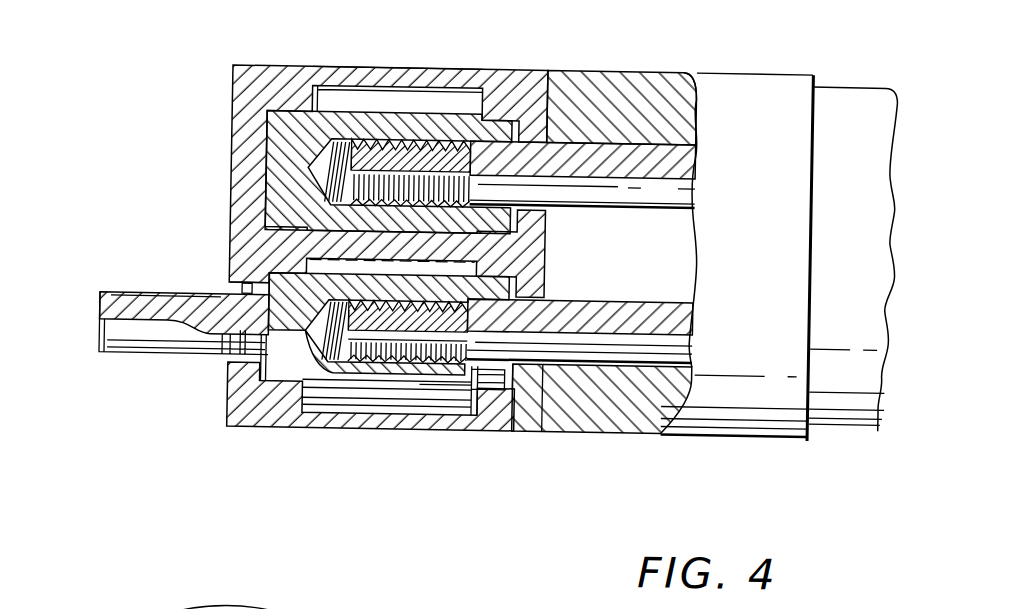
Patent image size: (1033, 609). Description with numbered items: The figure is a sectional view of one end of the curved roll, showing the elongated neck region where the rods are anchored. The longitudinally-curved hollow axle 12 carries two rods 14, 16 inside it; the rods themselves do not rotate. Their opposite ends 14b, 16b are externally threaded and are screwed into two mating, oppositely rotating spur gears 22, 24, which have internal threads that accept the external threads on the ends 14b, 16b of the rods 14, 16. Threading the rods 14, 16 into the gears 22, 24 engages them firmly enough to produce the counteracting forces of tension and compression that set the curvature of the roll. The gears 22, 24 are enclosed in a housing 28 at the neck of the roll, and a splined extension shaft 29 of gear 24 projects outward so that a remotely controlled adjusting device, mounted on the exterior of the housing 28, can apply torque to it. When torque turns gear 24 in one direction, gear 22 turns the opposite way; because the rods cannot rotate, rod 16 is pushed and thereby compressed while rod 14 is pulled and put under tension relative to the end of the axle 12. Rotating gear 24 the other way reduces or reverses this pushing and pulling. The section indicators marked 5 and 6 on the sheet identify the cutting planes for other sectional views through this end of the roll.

The hollow axle 12 is at (697, 429).
The rod 14 is at (619, 130).
The threaded end of rod 14 14b is at (448, 139).
The rod 16 is at (588, 351).
The threaded end of rod 16 16b is at (457, 429).
The spur gear 22 is at (297, 129).
The spur gear 24 is at (329, 372).
The housing 28 is at (398, 65).
The splined extension shaft 29 is at (105, 352).
The section line 5- 5 is at (49, 3).
The section line 6- 6 is at (866, 11).